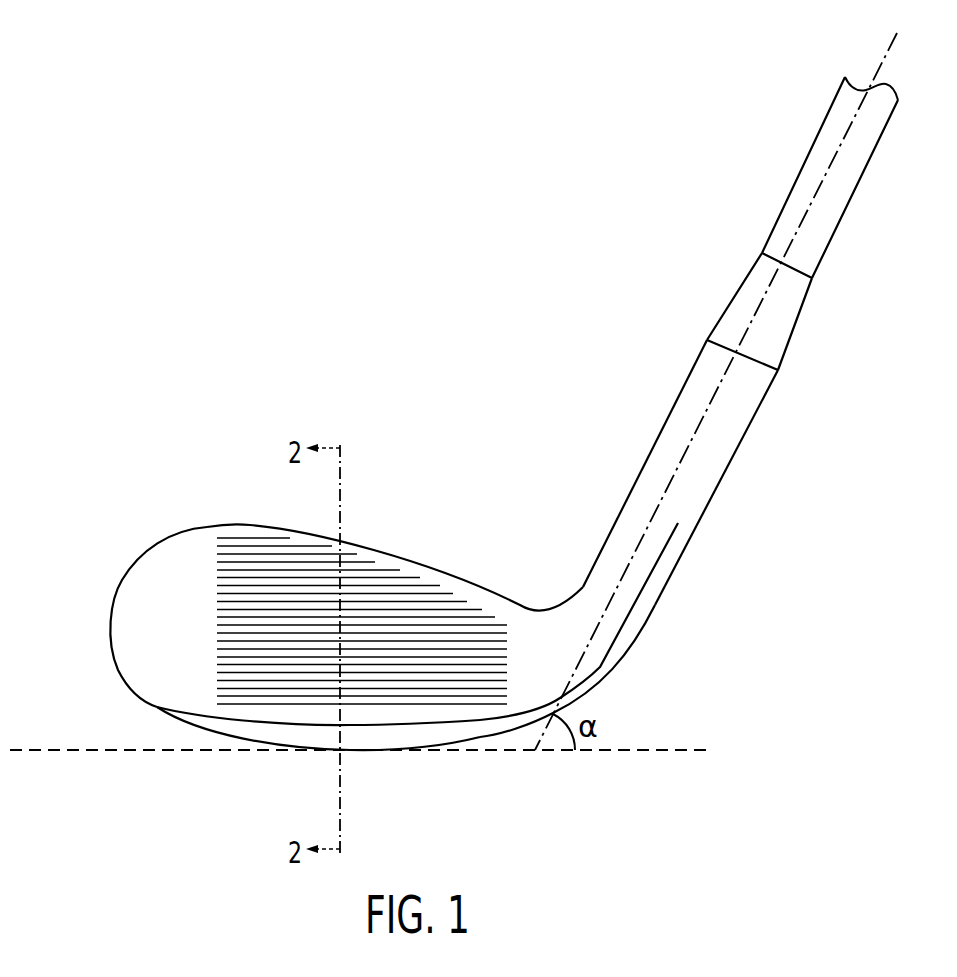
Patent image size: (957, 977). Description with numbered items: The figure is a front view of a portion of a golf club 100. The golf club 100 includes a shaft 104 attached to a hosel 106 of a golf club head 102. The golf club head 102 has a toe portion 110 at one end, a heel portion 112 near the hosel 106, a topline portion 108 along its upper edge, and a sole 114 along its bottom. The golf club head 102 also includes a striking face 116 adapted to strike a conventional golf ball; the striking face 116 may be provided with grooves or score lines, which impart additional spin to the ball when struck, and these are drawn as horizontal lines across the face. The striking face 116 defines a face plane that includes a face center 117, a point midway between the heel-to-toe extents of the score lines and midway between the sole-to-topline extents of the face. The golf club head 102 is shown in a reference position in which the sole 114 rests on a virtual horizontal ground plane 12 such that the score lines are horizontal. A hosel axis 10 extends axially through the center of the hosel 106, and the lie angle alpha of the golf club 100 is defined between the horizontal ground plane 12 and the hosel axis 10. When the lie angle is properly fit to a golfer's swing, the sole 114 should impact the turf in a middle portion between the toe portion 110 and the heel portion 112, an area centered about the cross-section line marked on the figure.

The hosel axis 10 is at (884, 44).
The horizontal ground plane 12 is at (667, 750).
The golf club 100 is at (742, 180).
The golf club head 102 is at (650, 370).
The shaft 104 is at (782, 200).
The hosel 106 is at (723, 443).
The topline portion 108 is at (207, 527).
The toe portion 110 is at (138, 678).
The heel portion 112 is at (603, 668).
The sole 114 is at (433, 738).
The striking face 116 is at (290, 637).
The face center 117 is at (340, 637).